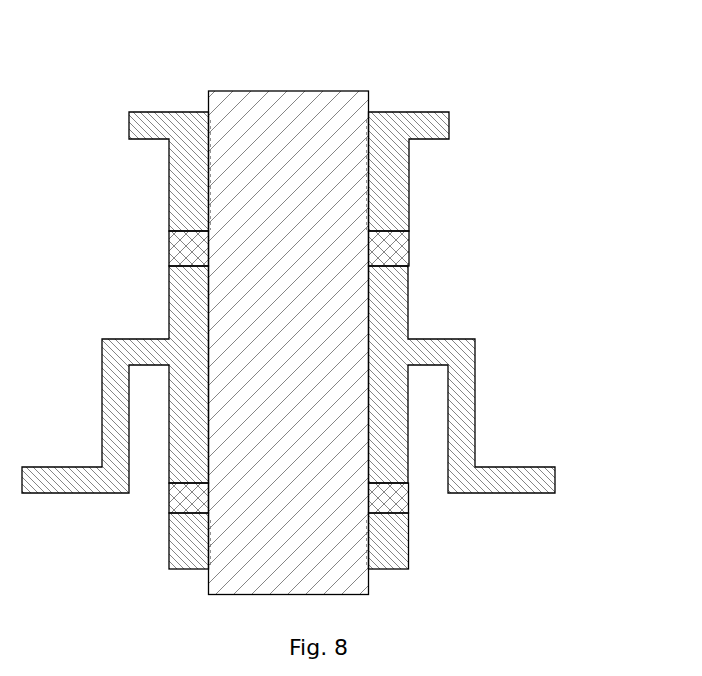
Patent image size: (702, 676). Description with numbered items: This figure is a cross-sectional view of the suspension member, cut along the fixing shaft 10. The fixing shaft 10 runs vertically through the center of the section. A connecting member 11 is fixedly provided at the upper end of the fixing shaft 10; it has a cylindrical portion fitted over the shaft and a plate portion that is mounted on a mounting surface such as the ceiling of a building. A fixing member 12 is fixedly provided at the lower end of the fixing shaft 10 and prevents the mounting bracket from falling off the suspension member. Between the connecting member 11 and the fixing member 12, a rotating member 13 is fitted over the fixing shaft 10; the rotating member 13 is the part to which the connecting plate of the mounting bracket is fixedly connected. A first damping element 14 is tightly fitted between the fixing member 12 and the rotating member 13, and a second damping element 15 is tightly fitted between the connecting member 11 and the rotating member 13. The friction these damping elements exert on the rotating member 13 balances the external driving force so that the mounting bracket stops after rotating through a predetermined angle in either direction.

The fixing shaft 10 is at (300, 91).
The connecting member 11 is at (449, 112).
The fixing member 12 is at (409, 569).
The rotating member 13 is at (475, 338).
The first damping element 14 is at (169, 498).
The second damping element 15 is at (169, 250).